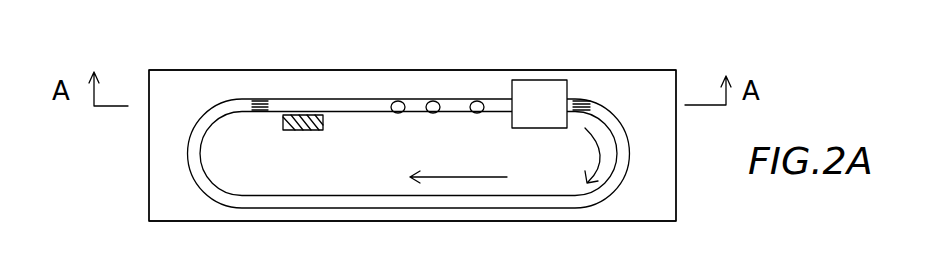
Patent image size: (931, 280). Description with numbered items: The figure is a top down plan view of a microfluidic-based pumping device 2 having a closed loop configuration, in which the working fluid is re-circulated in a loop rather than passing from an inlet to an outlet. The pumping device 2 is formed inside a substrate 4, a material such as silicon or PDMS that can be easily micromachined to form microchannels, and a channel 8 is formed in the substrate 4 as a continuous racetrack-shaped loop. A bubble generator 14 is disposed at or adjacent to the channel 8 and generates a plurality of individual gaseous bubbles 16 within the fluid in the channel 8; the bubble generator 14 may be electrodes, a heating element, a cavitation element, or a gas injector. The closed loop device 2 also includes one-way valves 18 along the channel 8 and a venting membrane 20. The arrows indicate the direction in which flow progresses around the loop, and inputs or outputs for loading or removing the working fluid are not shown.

The pumping device 2 is at (667, 55).
The substrate 4 is at (678, 76).
The channel 8 is at (335, 99).
The bubble generator 14 is at (303, 130).
The bubbles 16 is at (477, 101).
The one-way valves 18 is at (262, 99).
The venting membrane 20 is at (540, 80).